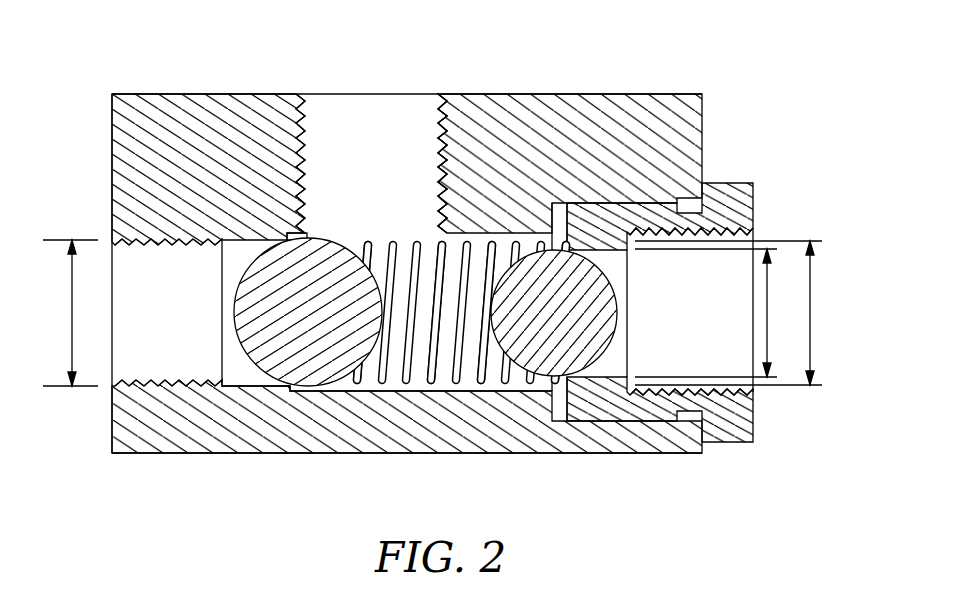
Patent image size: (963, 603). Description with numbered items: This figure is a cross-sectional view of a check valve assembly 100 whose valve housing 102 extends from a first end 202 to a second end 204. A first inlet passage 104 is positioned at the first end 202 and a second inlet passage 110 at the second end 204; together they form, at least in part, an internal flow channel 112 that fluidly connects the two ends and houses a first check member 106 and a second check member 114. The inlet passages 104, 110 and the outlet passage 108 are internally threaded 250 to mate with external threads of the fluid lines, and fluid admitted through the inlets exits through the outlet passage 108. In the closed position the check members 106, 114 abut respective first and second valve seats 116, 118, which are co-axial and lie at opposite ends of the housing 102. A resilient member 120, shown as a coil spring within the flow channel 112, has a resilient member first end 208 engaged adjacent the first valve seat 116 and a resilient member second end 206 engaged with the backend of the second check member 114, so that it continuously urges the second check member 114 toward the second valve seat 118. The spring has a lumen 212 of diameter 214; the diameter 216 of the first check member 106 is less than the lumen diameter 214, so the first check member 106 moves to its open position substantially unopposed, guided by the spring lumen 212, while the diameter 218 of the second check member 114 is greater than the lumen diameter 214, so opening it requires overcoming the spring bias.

The check valve assembly 100 is at (740, 35).
The valve housing 102 is at (112, 162).
The first inlet passage 104 is at (620, 370).
The first check member 106 is at (614, 312).
The outlet passage 108 is at (407, 108).
The second inlet passage 110 is at (230, 384).
The internal flow channel 112 is at (445, 384).
The second check member 114 is at (234, 315).
The first valve seat 116 is at (567, 250).
The second valve seat 118 is at (287, 233).
The resilient member 120 is at (479, 386).
The first end 202 is at (755, 420).
The second end 204 is at (112, 420).
The resilient member second end 206 is at (357, 384).
The resilient member first end 208 is at (553, 384).
The spring lumen 212 is at (432, 295).
The spring lumen diameter 214 is at (815, 310).
The first check member diameter 216 is at (768, 305).
The second check member diameter 218 is at (72, 312).
The internal threads 250 is at (437, 155).